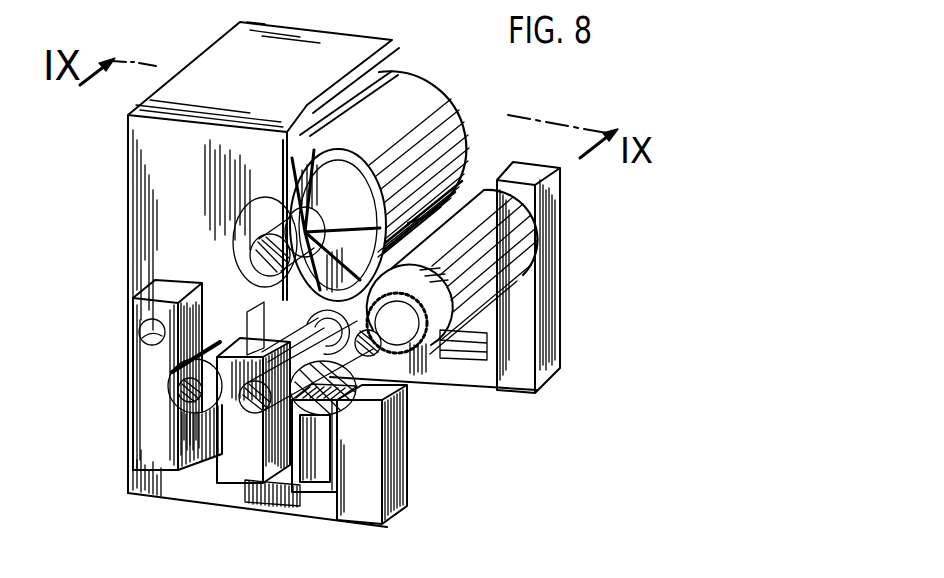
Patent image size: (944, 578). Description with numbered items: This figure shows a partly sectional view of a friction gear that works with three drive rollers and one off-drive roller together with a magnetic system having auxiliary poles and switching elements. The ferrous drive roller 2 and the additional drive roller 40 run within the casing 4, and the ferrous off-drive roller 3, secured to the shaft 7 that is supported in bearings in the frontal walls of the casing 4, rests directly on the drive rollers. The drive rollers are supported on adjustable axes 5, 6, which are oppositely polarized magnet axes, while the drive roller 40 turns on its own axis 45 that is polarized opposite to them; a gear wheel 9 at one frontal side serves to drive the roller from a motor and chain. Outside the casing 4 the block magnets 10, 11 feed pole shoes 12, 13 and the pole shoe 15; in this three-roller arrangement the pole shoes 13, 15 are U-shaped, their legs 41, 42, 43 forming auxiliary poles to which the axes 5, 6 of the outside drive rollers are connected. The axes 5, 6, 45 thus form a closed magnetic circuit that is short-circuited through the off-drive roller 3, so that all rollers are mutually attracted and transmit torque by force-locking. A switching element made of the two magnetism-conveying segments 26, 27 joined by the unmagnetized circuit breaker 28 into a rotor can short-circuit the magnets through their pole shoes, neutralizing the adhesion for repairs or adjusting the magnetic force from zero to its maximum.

The drive roller 2 is at (482, 193).
The off-drive roller 3 is at (447, 116).
The casing 4 is at (197, 82).
The adjustable axis 5 is at (142, 330).
The adjustable axis 6 is at (403, 360).
The shaft 7 is at (262, 253).
The gear wheel 9 is at (430, 357).
The block magnet 10 is at (225, 487).
The block magnet 11 is at (458, 333).
The pole shoe 12 is at (227, 467).
The pole shoe 13 is at (307, 503).
The pole shoe 15 is at (510, 380).
The segment 26 is at (177, 373).
The segment 27 is at (178, 405).
The circuit breaker 28 is at (180, 386).
The drive roller 40 is at (343, 423).
The leg 41 is at (143, 473).
The leg 42 is at (405, 476).
The leg 43 is at (550, 302).
The axis 45 is at (300, 478).